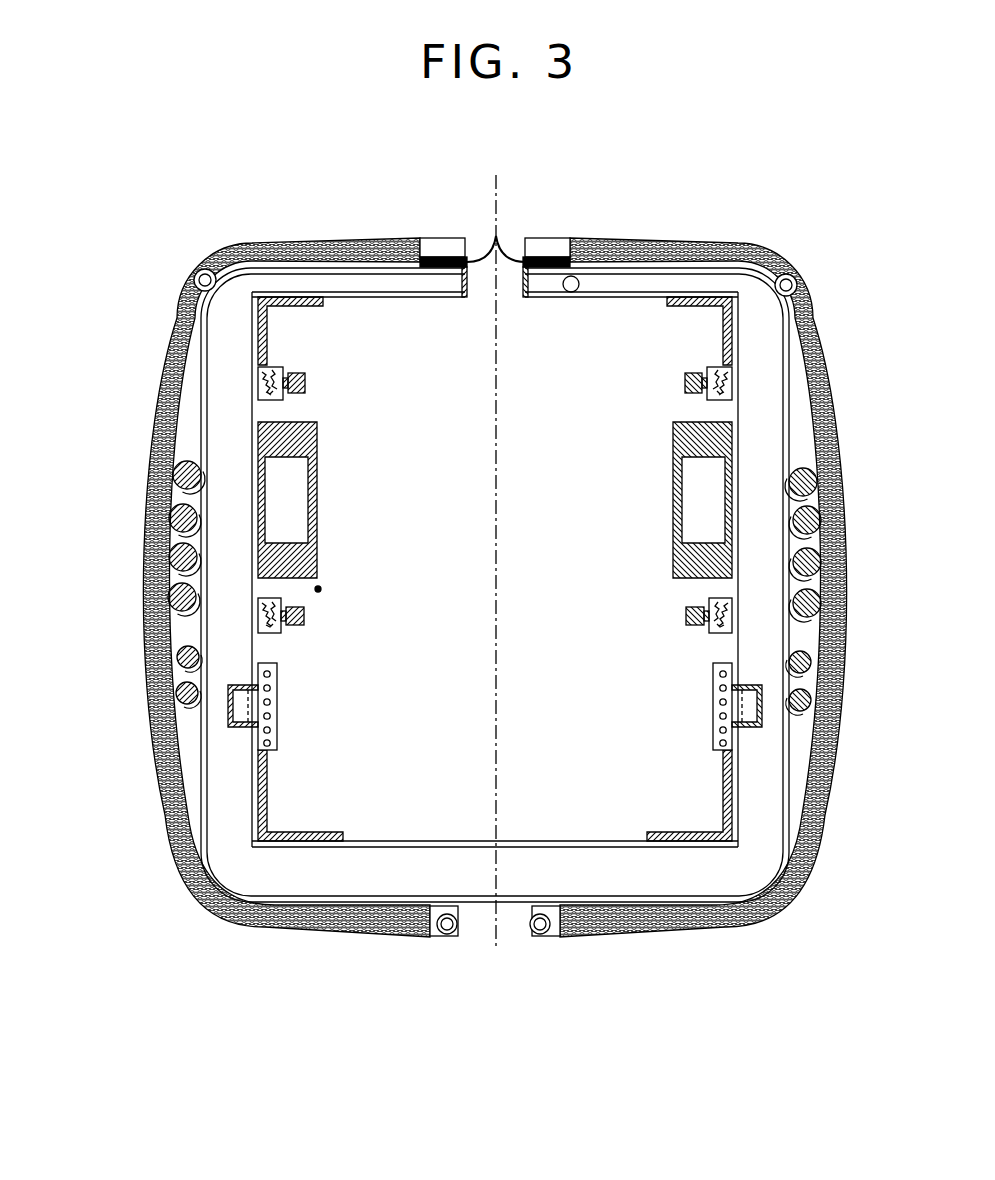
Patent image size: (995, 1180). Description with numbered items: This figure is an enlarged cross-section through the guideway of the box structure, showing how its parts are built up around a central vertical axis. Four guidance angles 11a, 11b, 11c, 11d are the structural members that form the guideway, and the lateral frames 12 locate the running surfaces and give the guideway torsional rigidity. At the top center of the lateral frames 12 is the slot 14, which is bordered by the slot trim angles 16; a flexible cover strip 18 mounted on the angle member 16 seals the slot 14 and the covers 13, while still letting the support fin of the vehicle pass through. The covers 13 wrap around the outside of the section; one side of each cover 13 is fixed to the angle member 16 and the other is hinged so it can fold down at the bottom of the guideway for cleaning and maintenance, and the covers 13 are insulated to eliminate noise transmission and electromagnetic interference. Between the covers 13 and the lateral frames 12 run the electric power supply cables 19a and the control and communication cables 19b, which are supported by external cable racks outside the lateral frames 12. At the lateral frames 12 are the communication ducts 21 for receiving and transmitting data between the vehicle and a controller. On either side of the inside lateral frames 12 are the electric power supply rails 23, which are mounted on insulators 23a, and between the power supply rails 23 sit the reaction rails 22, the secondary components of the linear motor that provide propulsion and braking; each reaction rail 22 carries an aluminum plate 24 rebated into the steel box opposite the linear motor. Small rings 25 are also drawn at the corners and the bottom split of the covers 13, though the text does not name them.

The guidance angle 11a is at (287, 297).
The guidance angle 11b is at (723, 303).
The guidance angle 11c is at (307, 835).
The guidance angle 11d is at (700, 842).
The lateral frame 12 is at (760, 820).
The cover 13 is at (165, 402).
The slot 14 is at (517, 292).
The slot trim angle 16 is at (470, 293).
The flexible cover strip 18 is at (487, 260).
The electric power supply cable 19a is at (143, 582).
The control and communication cable 19b is at (140, 692).
The communication duct 21 is at (278, 673).
The reaction rail 22 is at (318, 589).
The electric power supply rail 23 is at (305, 385).
The insulator 23a is at (258, 370).
The aluminum plate 24 is at (318, 542).
The ring / eyelet 25 is at (200, 631).